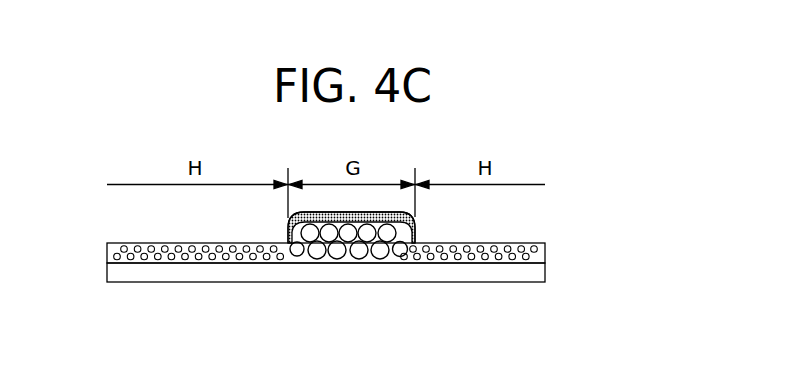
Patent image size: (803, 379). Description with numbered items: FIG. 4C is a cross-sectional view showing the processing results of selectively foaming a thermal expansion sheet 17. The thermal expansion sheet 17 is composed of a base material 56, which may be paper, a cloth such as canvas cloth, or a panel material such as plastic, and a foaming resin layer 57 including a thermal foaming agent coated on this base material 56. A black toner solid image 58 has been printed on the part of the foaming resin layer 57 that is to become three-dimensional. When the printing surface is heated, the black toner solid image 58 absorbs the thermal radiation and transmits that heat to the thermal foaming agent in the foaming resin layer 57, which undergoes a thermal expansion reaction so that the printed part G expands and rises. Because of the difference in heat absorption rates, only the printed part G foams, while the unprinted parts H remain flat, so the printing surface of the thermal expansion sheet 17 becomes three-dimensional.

The thermal expansion sheet 17 is at (395, 258).
The base material 56 is at (545, 277).
The foaming resin layer 57 is at (545, 248).
The black toner solid image 58 is at (402, 210).